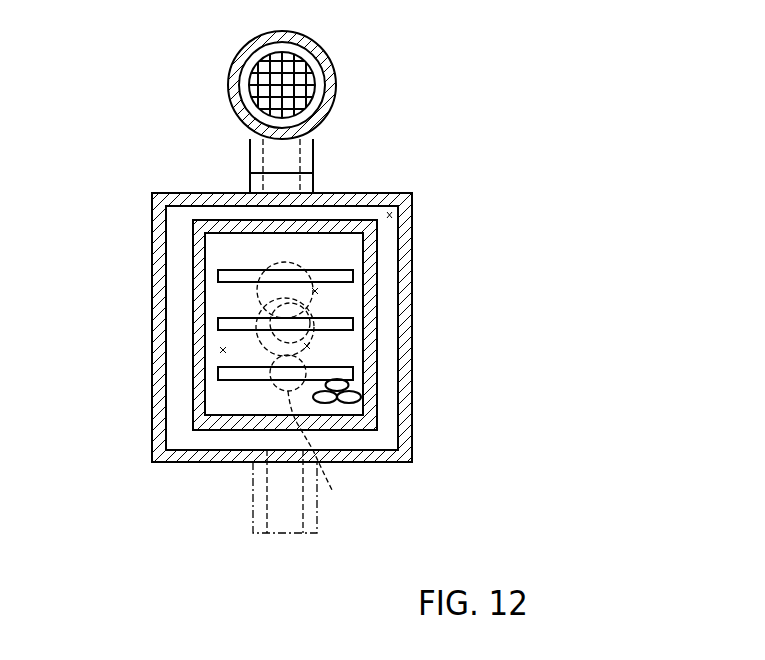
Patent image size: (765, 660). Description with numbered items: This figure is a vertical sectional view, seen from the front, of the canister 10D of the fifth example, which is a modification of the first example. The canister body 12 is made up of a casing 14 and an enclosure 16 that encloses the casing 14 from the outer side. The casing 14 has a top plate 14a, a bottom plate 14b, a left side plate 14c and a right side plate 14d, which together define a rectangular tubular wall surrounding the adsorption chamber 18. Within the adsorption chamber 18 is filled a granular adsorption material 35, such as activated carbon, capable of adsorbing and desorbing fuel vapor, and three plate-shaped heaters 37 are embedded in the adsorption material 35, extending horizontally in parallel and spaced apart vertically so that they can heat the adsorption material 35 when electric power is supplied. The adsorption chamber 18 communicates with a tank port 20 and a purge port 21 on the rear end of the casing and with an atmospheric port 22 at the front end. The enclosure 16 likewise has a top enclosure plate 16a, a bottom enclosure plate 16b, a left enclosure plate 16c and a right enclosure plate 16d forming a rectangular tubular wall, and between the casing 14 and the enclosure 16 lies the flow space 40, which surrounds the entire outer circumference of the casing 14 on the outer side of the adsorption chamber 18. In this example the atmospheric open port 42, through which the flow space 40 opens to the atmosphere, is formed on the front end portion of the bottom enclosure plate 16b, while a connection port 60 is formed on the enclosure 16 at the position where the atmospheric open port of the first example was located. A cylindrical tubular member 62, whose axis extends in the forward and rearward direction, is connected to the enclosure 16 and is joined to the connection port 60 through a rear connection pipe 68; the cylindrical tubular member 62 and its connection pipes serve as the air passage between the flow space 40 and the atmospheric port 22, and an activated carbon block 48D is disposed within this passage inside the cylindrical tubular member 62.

The canister 10D is at (402, 140).
The canister body 12 is at (438, 223).
The casing 14 is at (188, 295).
The top plate 14a is at (215, 225).
The bottom plate 14b is at (222, 423).
The left side plate 14c is at (200, 404).
The right side plate 14d is at (370, 325).
The enclosure 16 is at (413, 300).
The top enclosure plate 16a is at (358, 192).
The bottom enclosure plate 16b is at (370, 455).
The left enclosure plate 16c is at (160, 215).
The right enclosure plate 16d is at (405, 372).
The adsorption chamber 18 is at (219, 350).
The tank port 20 is at (317, 290).
The purge port 21 is at (312, 435).
The atmospheric port 22 is at (307, 345).
The adsorption material 35 is at (362, 397).
The heaters 37 is at (228, 275).
The flow space 40 is at (413, 202).
The atmospheric open port 42 is at (310, 523).
The activated carbon block 48D is at (258, 58).
The connection port 60 is at (255, 183).
The cylindrical tubular member 62 is at (323, 63).
The rear connection pipe 68 is at (255, 157).